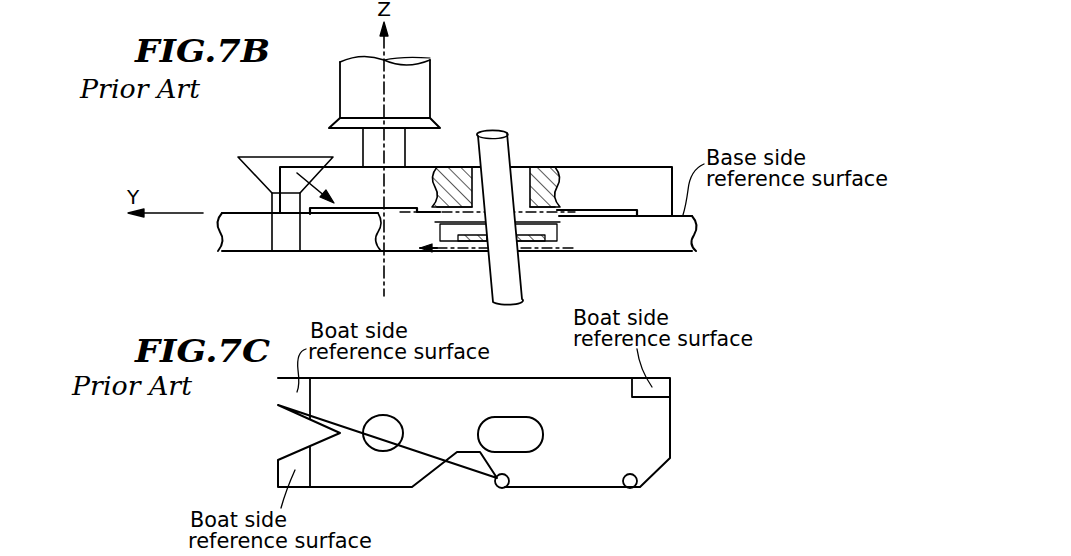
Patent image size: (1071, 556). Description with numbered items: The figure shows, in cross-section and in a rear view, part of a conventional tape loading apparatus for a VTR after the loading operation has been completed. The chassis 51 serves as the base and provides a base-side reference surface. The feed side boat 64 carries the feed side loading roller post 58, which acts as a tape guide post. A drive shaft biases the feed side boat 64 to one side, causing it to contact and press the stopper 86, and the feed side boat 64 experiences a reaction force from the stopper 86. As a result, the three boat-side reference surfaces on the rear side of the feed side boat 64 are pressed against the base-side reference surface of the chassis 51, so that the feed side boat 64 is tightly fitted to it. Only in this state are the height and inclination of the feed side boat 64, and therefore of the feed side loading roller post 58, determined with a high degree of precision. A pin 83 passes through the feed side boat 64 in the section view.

The chassis 51 is at (253, 252).
The feed side loading roller post 58 is at (422, 83).
The feed side boat 64 is at (593, 166).
The pin 83 is at (502, 158).
The stopper 86 is at (262, 156).